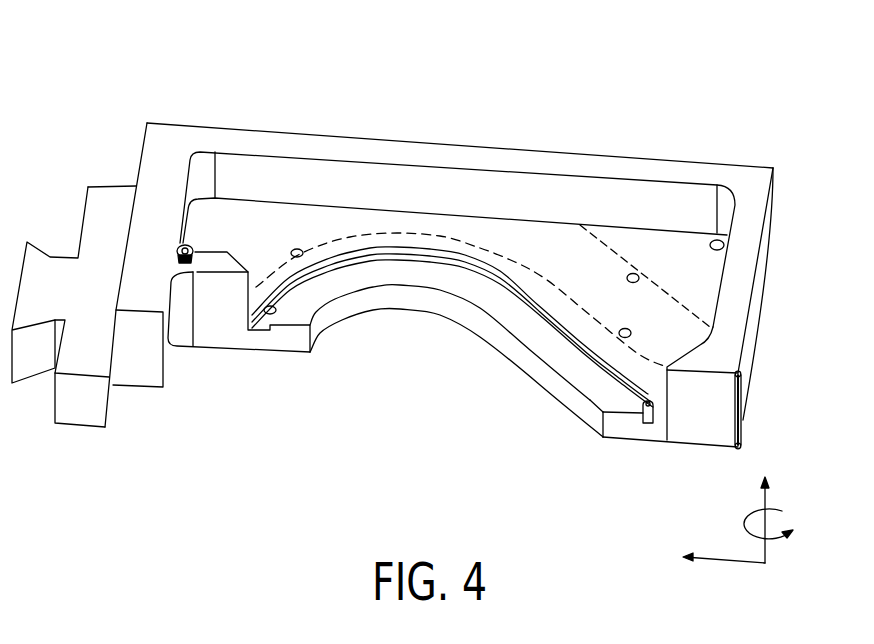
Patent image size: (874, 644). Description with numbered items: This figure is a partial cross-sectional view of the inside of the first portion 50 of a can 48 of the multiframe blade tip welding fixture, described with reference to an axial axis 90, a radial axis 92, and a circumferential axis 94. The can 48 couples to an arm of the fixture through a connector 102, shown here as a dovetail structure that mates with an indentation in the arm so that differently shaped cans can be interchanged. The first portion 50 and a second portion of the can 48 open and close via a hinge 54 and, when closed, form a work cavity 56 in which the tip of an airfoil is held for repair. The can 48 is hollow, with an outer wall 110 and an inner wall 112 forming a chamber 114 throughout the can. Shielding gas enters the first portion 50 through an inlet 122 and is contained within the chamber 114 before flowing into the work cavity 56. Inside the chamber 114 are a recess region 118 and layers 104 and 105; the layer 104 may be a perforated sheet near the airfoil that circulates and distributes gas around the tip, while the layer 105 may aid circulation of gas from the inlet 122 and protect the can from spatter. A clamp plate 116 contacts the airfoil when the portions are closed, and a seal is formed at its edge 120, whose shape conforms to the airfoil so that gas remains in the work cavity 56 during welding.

The can 48 is at (704, 69).
The first portion 50 is at (704, 130).
The hinge 54 is at (745, 385).
The work cavity 56 is at (393, 320).
The axial axis 90 is at (766, 503).
The radial axis 92 is at (730, 562).
The circumferential axis 94 is at (744, 520).
The connector 102 is at (53, 241).
The layer 104 is at (541, 278).
The layer 105 is at (676, 297).
The outer wall 110 is at (789, 239).
The inner wall 112 is at (480, 205).
The chamber 114 is at (668, 330).
The clamp plate 116 is at (590, 388).
The recess region 118 is at (657, 423).
The edge 120 is at (547, 375).
The inlet 122 is at (722, 240).